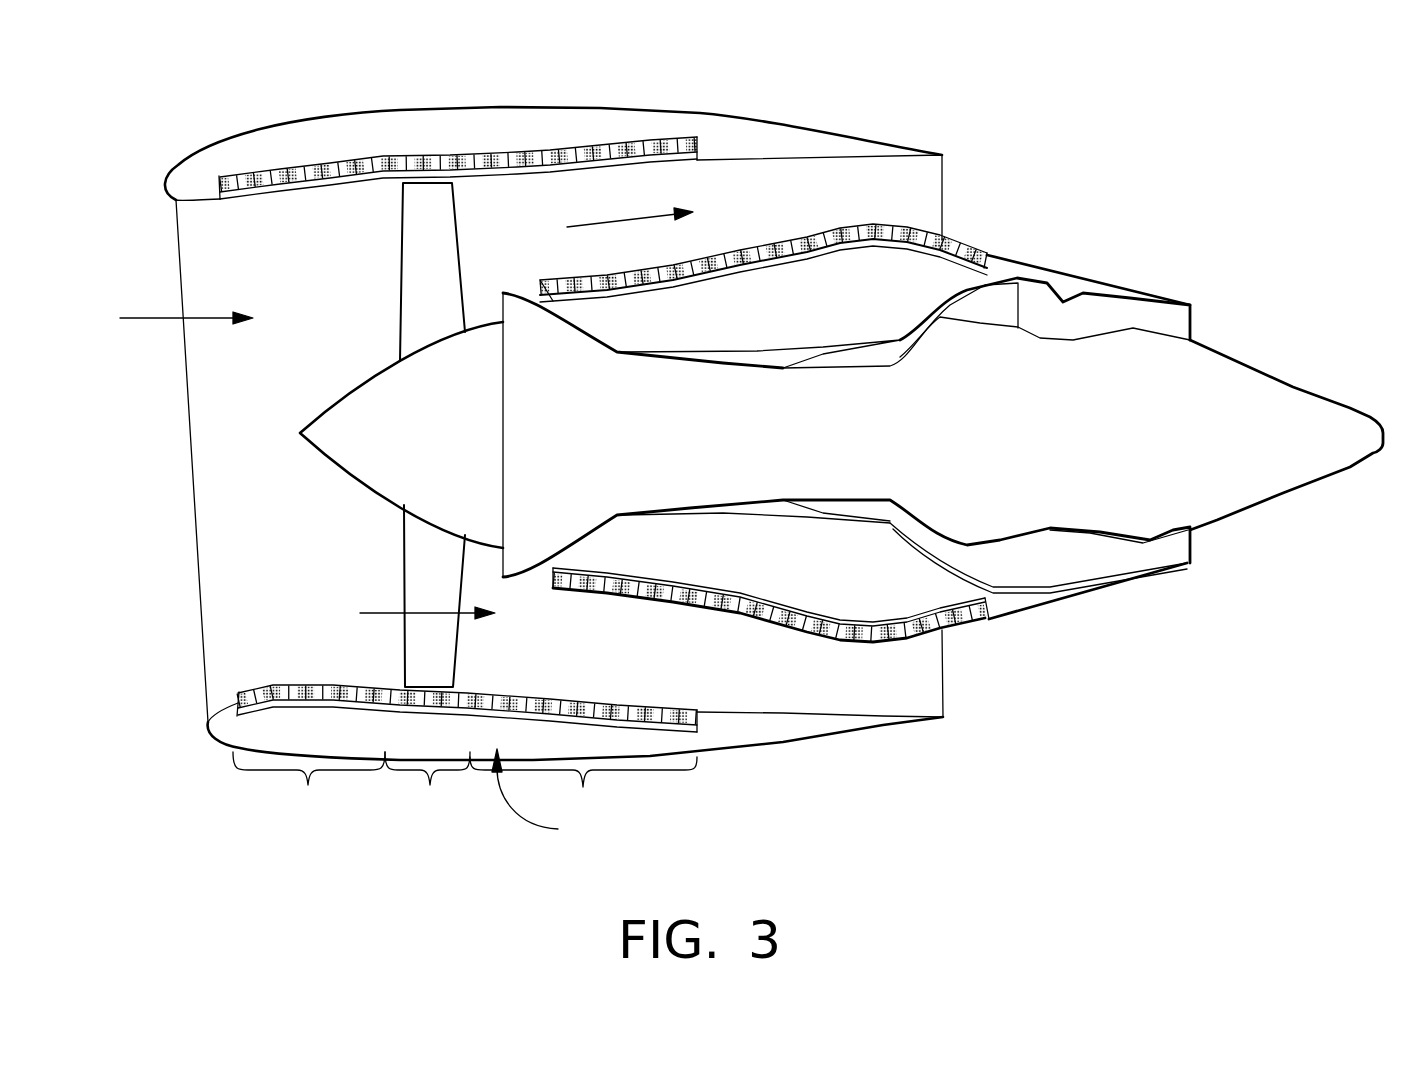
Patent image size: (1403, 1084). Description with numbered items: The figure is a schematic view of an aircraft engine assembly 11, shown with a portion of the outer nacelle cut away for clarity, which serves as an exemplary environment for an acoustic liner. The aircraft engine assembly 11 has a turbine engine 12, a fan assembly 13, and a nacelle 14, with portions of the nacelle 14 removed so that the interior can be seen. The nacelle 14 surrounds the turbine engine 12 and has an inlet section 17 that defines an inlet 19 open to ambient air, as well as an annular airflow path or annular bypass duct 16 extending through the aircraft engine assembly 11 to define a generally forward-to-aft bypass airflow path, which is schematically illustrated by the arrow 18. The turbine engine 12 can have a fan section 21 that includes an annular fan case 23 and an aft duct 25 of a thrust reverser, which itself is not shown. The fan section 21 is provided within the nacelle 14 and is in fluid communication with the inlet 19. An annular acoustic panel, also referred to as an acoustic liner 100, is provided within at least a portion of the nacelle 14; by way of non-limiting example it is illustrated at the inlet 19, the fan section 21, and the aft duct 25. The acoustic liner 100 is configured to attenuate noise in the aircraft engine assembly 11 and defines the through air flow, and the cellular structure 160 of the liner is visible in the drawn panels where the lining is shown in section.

The aircraft engine assembly 11 is at (250, 108).
The turbine engine 12 is at (543, 293).
The fan assembly 13 is at (430, 297).
The nacelle 14 is at (342, 117).
The annular bypass duct 16 is at (787, 170).
The inlet section 17 is at (300, 787).
The arrow 18 is at (622, 220).
The inlet 19 is at (263, 622).
The fan section 21 is at (541, 797).
The annular fan case 23 is at (430, 787).
The aft duct 25 is at (583, 787).
The acoustic panel 100 is at (577, 145).
The cellular core 160 is at (523, 152).